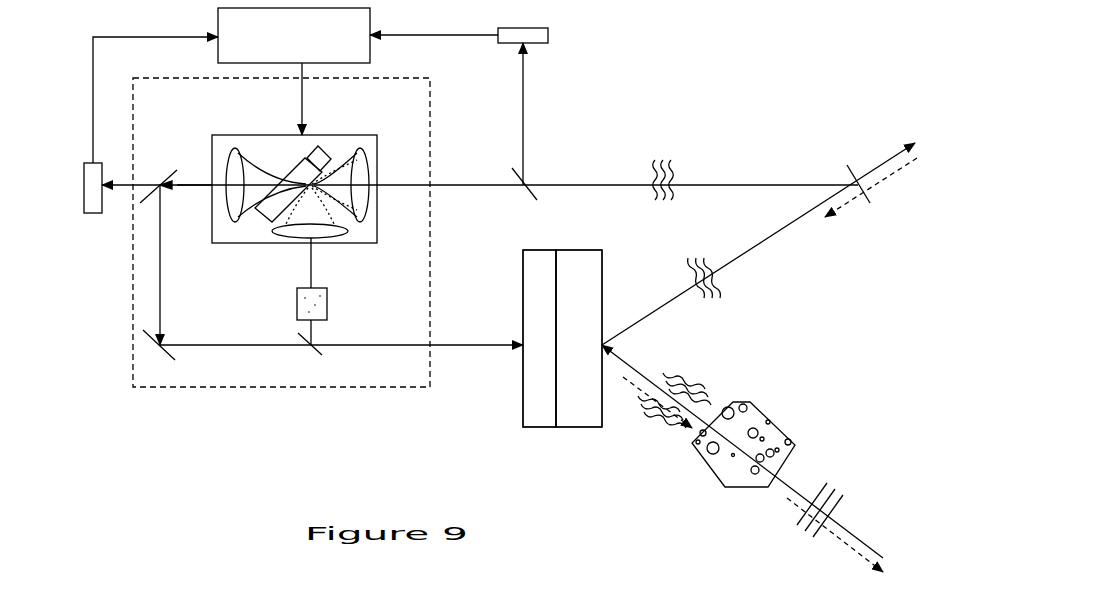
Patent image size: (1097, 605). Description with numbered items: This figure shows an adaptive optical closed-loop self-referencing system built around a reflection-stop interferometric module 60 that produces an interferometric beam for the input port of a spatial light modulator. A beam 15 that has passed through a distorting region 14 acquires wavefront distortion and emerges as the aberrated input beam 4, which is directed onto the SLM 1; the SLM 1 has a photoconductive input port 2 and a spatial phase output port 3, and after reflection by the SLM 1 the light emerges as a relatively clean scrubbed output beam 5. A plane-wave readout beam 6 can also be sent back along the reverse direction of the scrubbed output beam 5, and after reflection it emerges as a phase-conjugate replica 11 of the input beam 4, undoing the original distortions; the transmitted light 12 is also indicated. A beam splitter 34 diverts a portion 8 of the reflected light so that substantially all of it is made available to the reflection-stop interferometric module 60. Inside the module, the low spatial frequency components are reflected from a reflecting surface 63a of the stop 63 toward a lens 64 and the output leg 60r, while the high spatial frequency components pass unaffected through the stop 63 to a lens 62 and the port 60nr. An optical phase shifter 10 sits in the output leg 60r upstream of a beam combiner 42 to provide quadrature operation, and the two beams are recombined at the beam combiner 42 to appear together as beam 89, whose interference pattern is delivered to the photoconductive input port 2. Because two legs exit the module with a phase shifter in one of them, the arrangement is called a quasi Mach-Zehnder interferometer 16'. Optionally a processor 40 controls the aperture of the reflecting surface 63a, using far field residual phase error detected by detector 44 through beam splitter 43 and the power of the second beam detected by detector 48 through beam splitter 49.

The spatial light modulator 1 is at (556, 435).
The photoconductive input port 2 is at (545, 262).
The spatial phase output port 3 is at (582, 270).
The aberrated input beam 4 is at (635, 360).
The scrubbed output beam 5 is at (883, 160).
The readout beam 6 is at (878, 185).
The portion of input beam 8 is at (655, 162).
The optical phase shifter 10 is at (297, 312).
The phase-conjugate replica 11 is at (630, 385).
The transmitted beam 12 is at (860, 555).
The distorting region 14 is at (770, 420).
The beam 15 is at (860, 535).
The quasi Mach-Zehnder interferometer 16' is at (281, 217).
The beam splitter 34 is at (853, 168).
The processor 40 is at (294, 35).
The beam combiner 42 is at (320, 352).
The beam splitter 43 is at (515, 168).
The detector 44 is at (527, 36).
The detector 48 is at (103, 166).
The beam splitter 49 is at (172, 172).
The reflection-stop interferometric module 60 is at (256, 243).
The reflected output leg 60r is at (312, 268).
The non-reflected output leg 60nr is at (193, 183).
The lens 62 is at (235, 150).
The stop 63 is at (305, 180).
The reflecting surface 63a is at (302, 178).
The lens 64 is at (340, 229).
The combined beam 89 is at (464, 343).